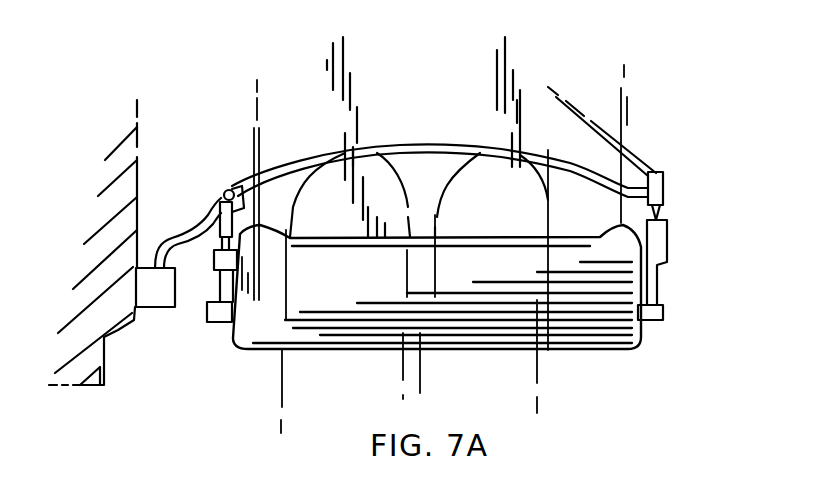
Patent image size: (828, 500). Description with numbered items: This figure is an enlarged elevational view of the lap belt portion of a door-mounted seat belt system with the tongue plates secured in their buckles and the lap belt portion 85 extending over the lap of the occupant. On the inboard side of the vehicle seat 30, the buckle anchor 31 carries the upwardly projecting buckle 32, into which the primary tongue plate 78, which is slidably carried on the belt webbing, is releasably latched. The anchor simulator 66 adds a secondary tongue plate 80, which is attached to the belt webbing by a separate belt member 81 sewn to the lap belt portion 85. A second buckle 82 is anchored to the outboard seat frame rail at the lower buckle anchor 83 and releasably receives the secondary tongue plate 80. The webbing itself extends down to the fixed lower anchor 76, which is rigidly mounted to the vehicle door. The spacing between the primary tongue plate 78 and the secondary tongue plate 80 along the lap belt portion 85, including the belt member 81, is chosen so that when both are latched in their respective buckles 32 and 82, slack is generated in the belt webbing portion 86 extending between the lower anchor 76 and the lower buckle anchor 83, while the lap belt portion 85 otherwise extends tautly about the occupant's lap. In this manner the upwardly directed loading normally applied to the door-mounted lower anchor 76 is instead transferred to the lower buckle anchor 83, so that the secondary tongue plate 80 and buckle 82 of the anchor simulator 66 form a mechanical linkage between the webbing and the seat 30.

The vehicle seat 30 is at (653, 105).
The buckle anchor 31 is at (657, 318).
The buckle 32 is at (664, 243).
The anchor simulator 66 is at (192, 320).
The lower anchor 76 is at (152, 297).
The primary tongue plate 78 is at (665, 186).
The secondary tongue plate 80 is at (220, 198).
The belt member 81 is at (237, 192).
The buckle 82 is at (227, 290).
The lower buckle anchor 83 is at (218, 322).
The lap belt portion 85 is at (440, 147).
The belt webbing portion 86 is at (198, 228).